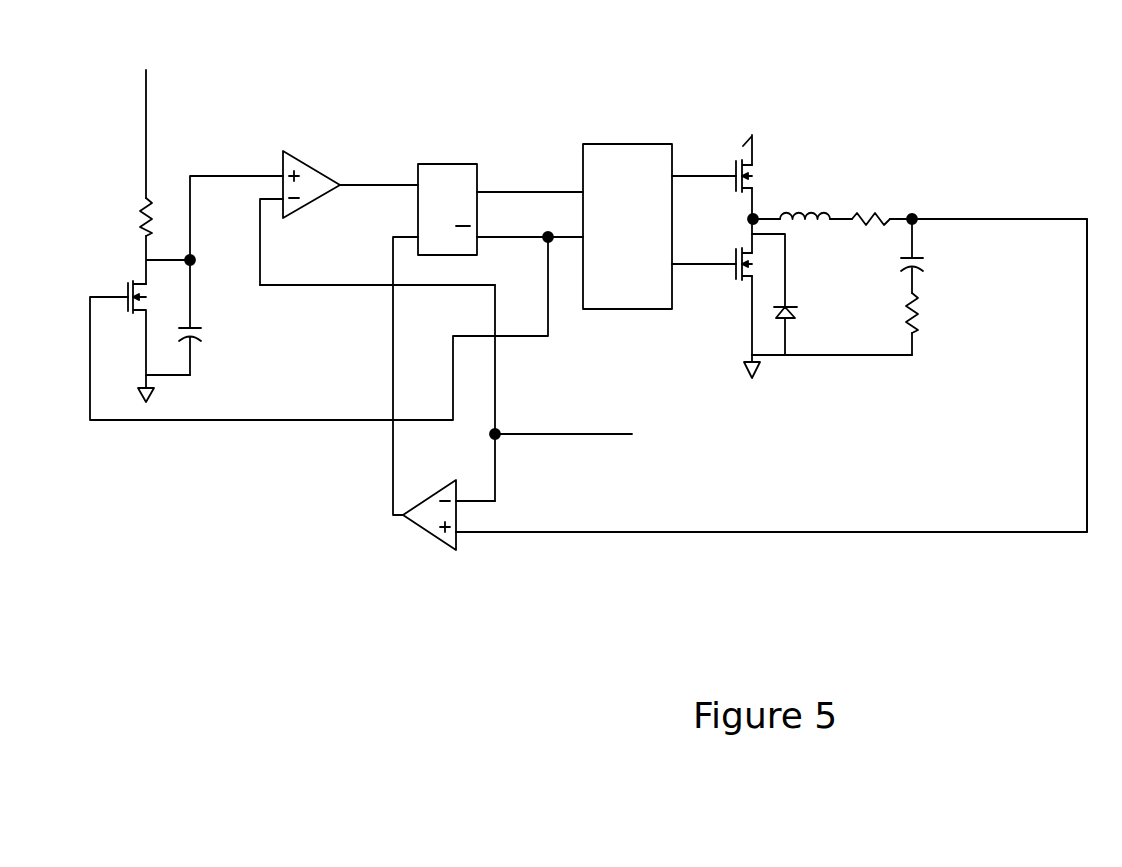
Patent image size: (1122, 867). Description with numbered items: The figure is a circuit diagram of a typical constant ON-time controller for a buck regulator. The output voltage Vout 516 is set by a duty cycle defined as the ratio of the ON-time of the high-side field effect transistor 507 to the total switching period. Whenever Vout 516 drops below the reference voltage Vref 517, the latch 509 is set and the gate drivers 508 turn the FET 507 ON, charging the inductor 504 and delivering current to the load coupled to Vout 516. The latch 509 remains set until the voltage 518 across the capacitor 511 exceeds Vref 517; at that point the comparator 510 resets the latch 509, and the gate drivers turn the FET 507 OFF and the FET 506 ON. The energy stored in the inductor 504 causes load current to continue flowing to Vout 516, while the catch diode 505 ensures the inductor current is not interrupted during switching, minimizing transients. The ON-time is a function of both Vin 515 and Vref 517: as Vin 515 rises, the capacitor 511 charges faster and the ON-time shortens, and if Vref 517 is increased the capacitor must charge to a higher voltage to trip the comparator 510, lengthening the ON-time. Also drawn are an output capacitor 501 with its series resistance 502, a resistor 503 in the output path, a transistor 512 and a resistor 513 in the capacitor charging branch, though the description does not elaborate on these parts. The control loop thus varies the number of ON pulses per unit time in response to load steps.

The output capacitor 501 is at (932, 267).
The equivalent series resistance (ESR) of output capacitor 502 is at (917, 315).
The resistor 503 is at (867, 217).
The inductor 504 is at (793, 203).
The catch diode 505 is at (792, 293).
The FET 506 is at (735, 285).
The high-side field effect transistor 507 is at (733, 187).
The gate drivers 508 is at (632, 143).
The latch 509 is at (432, 162).
The comparator 510 is at (317, 170).
The capacitor 511 is at (203, 348).
The transistor switch 512 is at (136, 280).
The resistor 513 is at (155, 190).
The Vin 515 is at (170, 52).
The output voltage 516 is at (965, 218).
The reference voltage 517 is at (297, 287).
The voltage 518 is at (190, 222).